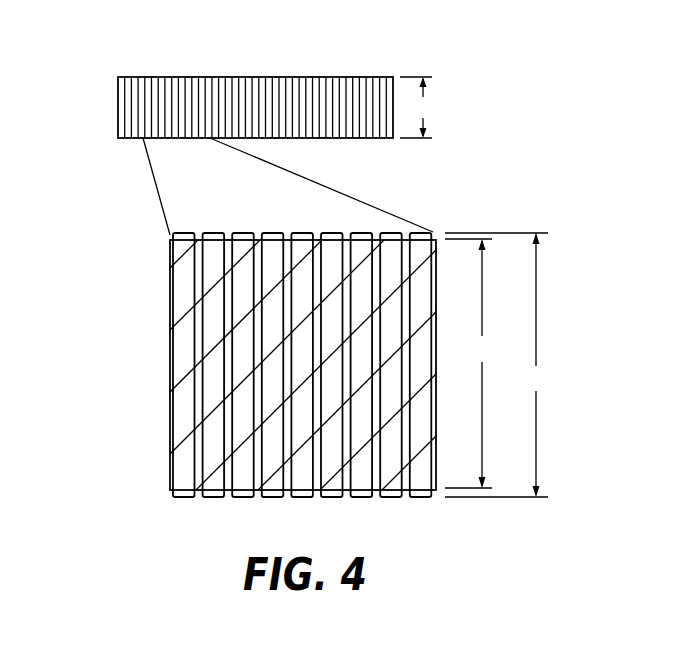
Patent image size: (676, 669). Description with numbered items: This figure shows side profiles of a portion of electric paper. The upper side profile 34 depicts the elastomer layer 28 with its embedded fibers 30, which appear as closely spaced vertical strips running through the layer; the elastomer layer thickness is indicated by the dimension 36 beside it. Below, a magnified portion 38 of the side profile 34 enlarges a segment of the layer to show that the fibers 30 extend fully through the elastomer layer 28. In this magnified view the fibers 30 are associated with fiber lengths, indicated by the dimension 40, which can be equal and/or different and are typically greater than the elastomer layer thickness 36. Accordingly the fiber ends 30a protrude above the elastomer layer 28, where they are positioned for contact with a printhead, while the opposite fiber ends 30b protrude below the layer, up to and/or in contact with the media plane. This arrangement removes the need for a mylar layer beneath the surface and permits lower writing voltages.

The elastomer layer 28 is at (118, 112).
The fibers 30 is at (177, 82).
The fiber ends 30a is at (272, 232).
The fiber ends 30b is at (210, 497).
The side profile 34 is at (311, 58).
The elastomer layer thickness 36 is at (448, 282).
The magnified portion 38 is at (413, 203).
The fiber lengths 40 is at (497, 365).